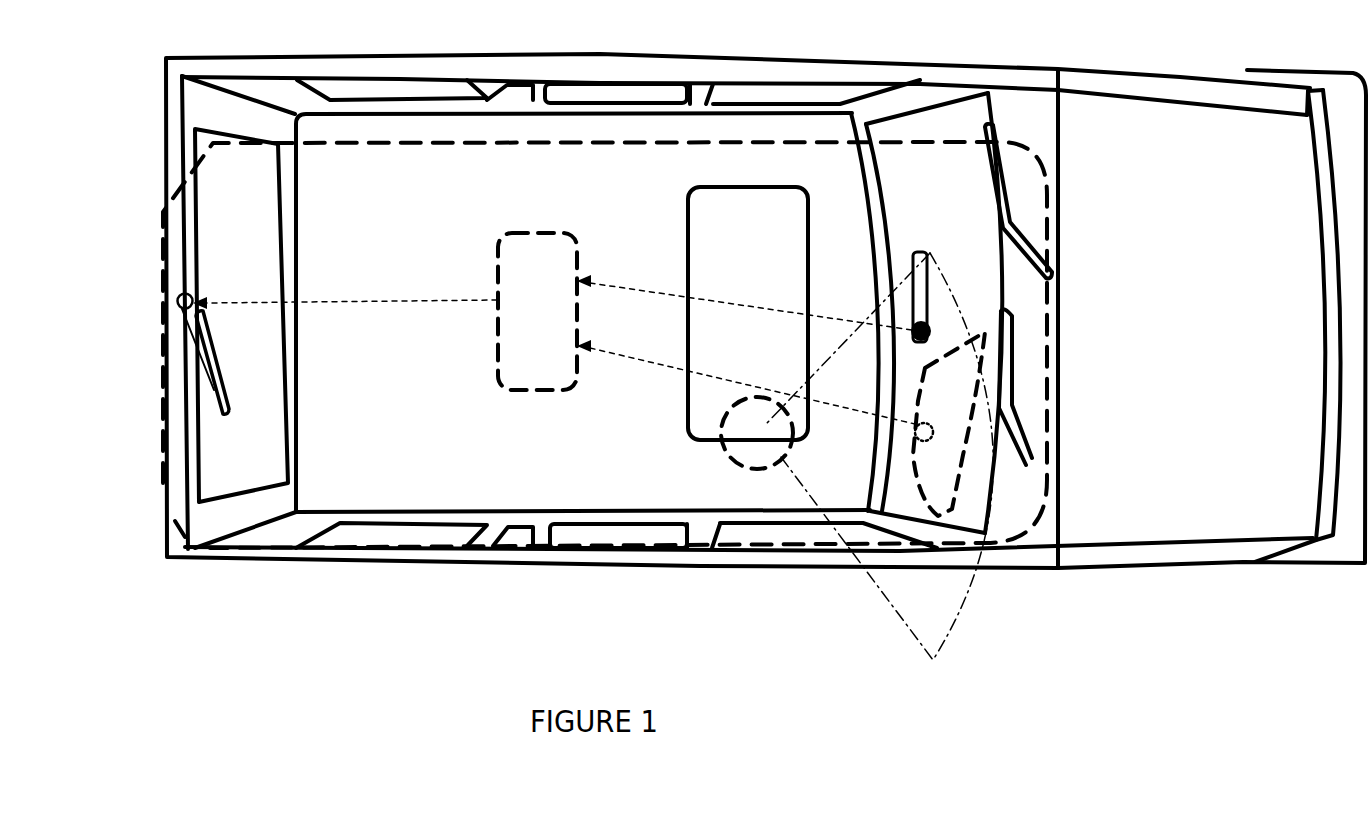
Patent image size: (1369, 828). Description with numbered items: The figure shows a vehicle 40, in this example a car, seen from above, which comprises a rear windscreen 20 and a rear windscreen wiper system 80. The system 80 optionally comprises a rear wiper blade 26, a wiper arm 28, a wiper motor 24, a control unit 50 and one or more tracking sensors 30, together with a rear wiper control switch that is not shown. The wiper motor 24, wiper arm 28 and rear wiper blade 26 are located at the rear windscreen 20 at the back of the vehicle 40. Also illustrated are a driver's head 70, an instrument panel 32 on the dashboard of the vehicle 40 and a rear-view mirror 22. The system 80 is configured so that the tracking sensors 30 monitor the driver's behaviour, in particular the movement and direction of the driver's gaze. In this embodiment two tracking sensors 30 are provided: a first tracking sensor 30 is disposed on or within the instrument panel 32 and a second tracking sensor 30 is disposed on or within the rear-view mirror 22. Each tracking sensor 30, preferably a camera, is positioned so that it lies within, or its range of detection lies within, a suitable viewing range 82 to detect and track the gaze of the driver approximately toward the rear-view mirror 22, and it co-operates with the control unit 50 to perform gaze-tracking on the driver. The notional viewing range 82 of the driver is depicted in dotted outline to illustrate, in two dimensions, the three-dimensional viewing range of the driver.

The rear windscreen 20 is at (258, 203).
The rear-view mirror 22 is at (926, 256).
The wiper motor 24 is at (177, 298).
The rear wiper blade 26 is at (224, 410).
The wiper arm 28 is at (200, 338).
The tracking sensor 30 is at (929, 330).
The instrument panel 32 is at (964, 413).
The vehicle 40 is at (261, 566).
The control unit 50 is at (552, 315).
The driver's head 70 is at (748, 428).
The rear windscreen wiper system 80 is at (388, 144).
The viewing range 82 is at (950, 606).